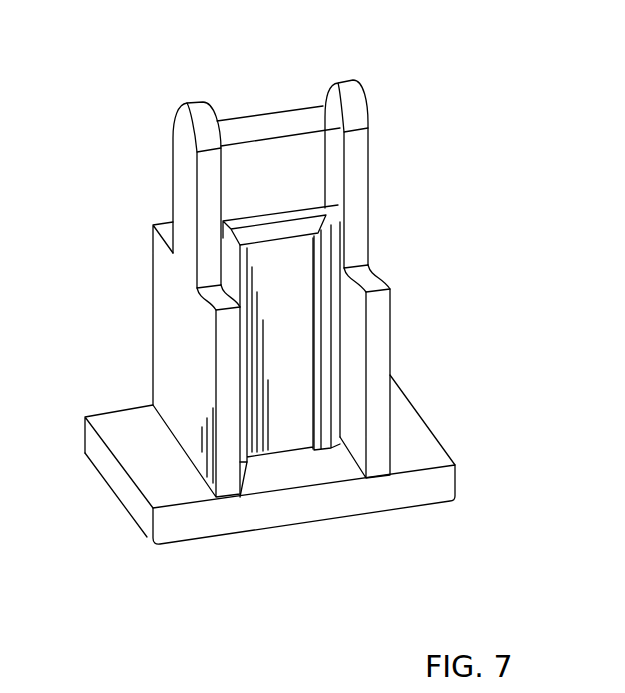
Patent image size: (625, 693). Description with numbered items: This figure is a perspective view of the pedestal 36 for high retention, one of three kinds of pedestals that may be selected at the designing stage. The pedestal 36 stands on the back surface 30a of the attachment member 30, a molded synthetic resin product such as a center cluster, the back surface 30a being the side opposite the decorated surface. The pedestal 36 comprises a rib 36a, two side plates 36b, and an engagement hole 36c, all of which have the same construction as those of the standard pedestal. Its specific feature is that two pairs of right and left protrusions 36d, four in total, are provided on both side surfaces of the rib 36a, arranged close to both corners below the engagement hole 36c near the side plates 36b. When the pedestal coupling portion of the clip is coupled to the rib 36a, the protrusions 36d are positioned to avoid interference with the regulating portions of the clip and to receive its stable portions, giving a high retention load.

The attachment member 30 is at (415, 492).
The back surface 30a is at (120, 422).
The pedestal for high retention 36 is at (275, 267).
The rib 36a is at (283, 366).
The side plates 36b is at (165, 325).
The engagement hole 36c is at (268, 225).
The protrusions 36d is at (238, 275).